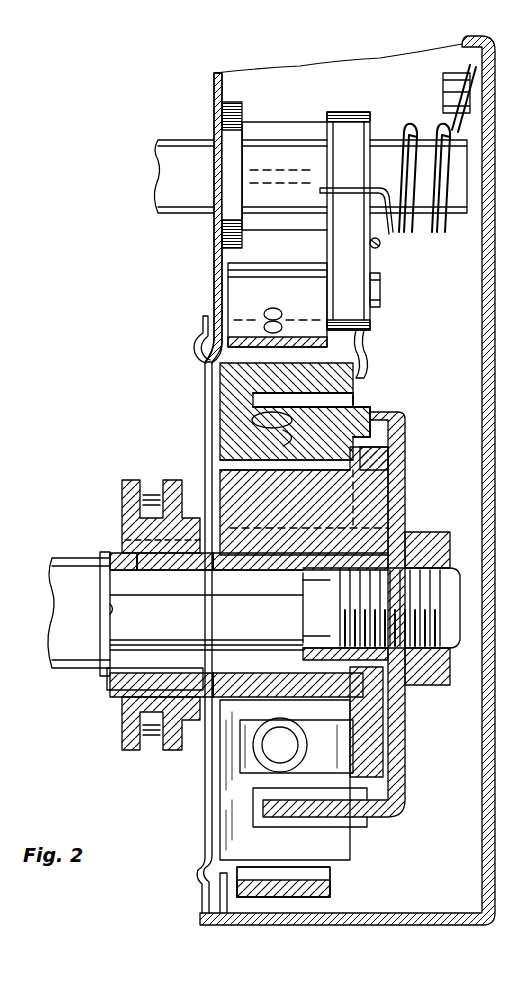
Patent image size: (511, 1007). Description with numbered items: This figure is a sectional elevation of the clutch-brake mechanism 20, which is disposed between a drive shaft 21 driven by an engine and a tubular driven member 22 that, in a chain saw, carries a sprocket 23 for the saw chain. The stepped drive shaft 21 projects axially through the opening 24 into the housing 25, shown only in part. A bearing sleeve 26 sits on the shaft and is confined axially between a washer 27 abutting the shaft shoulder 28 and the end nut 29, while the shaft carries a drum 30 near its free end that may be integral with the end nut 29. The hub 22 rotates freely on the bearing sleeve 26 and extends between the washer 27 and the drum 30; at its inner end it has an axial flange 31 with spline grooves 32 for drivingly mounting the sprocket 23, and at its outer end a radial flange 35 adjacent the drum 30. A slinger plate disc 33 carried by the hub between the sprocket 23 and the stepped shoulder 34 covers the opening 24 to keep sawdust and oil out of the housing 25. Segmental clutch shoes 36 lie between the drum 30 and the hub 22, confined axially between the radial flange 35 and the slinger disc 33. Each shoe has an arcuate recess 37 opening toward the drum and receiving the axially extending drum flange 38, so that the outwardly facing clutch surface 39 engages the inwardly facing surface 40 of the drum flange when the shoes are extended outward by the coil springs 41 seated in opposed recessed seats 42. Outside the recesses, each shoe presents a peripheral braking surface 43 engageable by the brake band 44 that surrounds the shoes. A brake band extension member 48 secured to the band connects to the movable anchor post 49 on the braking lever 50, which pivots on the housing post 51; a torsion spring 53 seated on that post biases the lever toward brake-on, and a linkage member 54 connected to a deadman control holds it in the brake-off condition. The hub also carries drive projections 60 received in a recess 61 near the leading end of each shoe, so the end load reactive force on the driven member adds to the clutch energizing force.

The clutch-brake mechanism 20 is at (103, 157).
The drive shaft 21 is at (67, 567).
The driven member 22 is at (273, 545).
The sprocket 23 is at (130, 500).
The opening 24 is at (198, 356).
The housing 25 is at (214, 258).
The bearing sleeve 26 is at (160, 567).
The washer 27 is at (107, 677).
The shaft shoulder 28 is at (108, 609).
The end nut 29 is at (435, 532).
The drum 30 is at (405, 477).
The axial flange 31 is at (137, 555).
The spline grooves 32 is at (118, 527).
The slinger plate disc 33 is at (205, 378).
The stepped shoulder 34 is at (213, 557).
The radial flange 35 is at (372, 700).
The clutch shoes 36 is at (235, 397).
The recess 37 is at (356, 399).
The drum flange 38 is at (355, 413).
The clutch surface 39 is at (283, 438).
The inwardly facing surface 40 is at (235, 419).
The coil springs 41 is at (258, 752).
The recessed seats 42 is at (250, 770).
The braking surface 43 is at (345, 360).
The brake band 44 is at (327, 895).
The brake band extension member 48 is at (250, 290).
The movable anchor post 49 is at (380, 300).
The braking lever 50 is at (363, 275).
The housing post 51 is at (383, 150).
The torsion spring 53 is at (410, 130).
The linkage member 54 is at (380, 244).
The drive projections 60 is at (247, 488).
The recess 61 is at (365, 460).